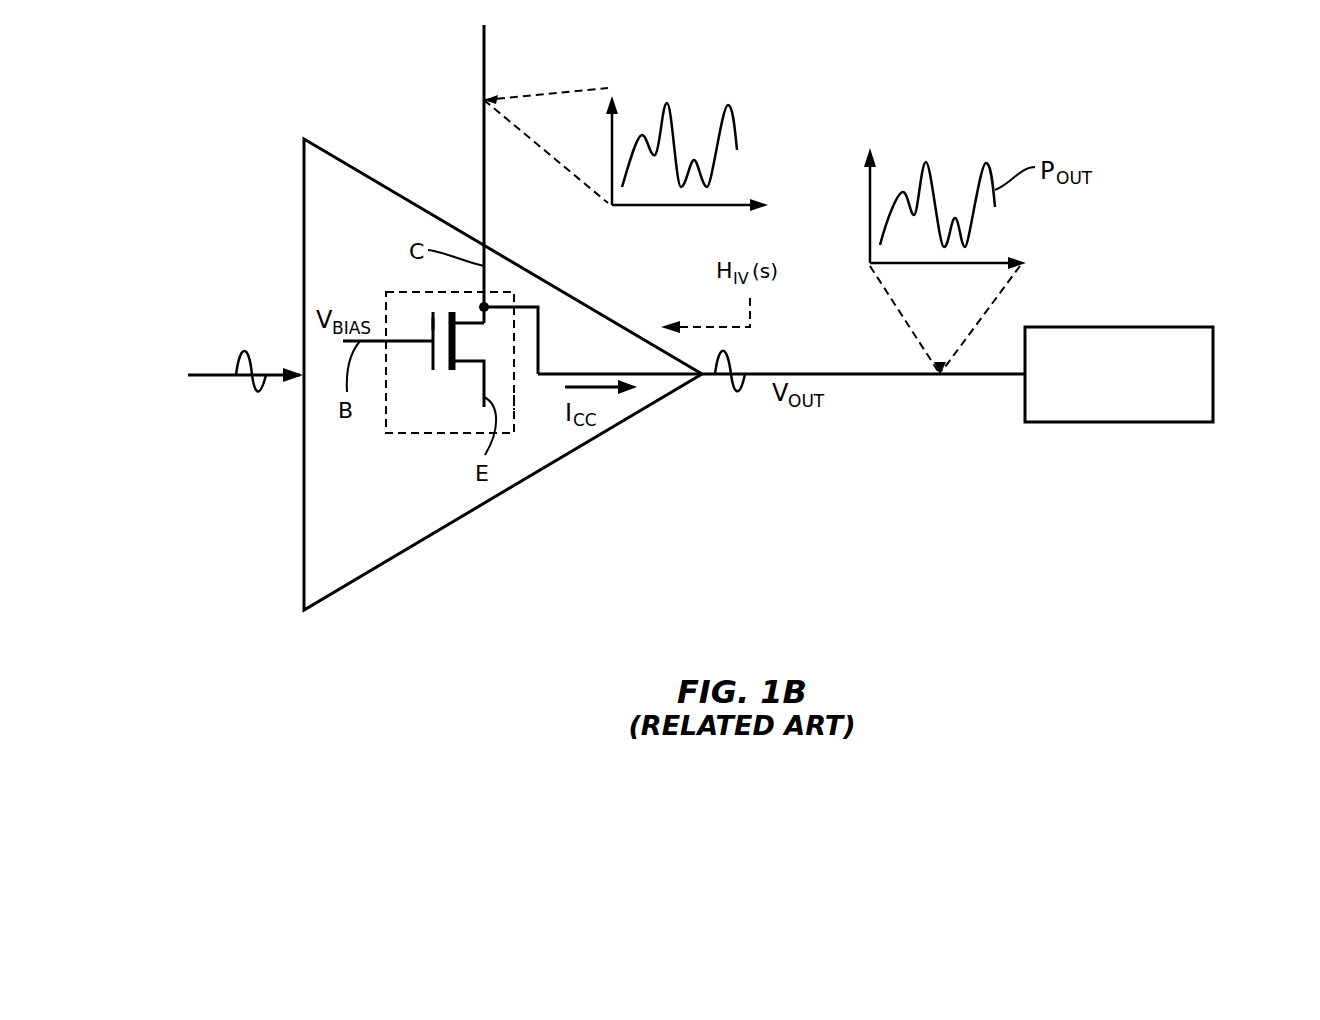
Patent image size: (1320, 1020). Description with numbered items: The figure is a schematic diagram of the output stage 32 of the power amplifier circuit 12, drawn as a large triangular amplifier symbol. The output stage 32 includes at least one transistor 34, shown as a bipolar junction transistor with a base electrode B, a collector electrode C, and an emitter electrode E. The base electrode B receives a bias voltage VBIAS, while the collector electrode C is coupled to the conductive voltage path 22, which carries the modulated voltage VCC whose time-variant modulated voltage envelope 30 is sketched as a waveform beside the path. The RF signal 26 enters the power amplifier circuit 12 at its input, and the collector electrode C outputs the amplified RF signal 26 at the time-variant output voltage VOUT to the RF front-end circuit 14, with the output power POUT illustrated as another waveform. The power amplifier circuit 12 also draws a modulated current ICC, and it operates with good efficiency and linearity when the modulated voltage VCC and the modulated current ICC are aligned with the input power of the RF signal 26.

The power amplifier circuit 12 is at (357, 527).
The RF front-end circuit 14 is at (421, 425).
The conductive voltage path 22 is at (484, 60).
The RF signal 26 is at (259, 392).
The time-variant modulated voltage envelope 30 is at (737, 128).
The output stage 32 is at (515, 402).
The transistor 34 is at (433, 322).